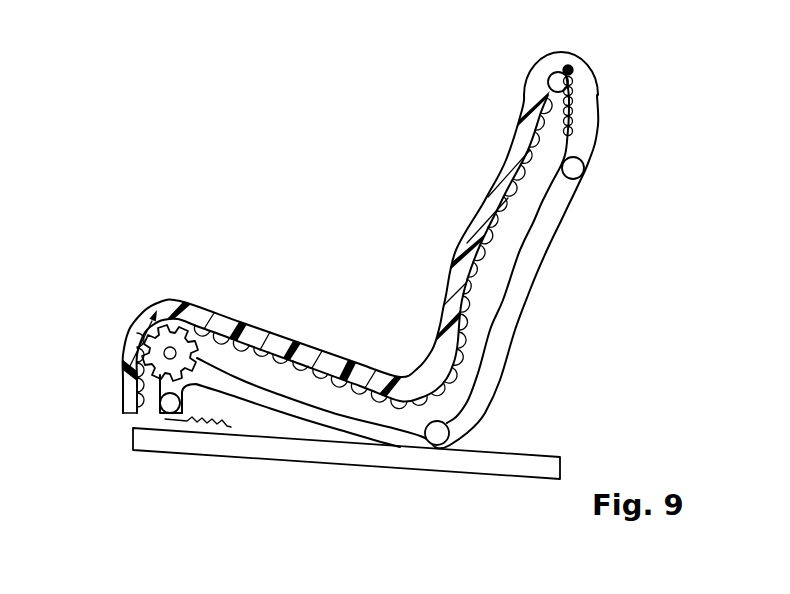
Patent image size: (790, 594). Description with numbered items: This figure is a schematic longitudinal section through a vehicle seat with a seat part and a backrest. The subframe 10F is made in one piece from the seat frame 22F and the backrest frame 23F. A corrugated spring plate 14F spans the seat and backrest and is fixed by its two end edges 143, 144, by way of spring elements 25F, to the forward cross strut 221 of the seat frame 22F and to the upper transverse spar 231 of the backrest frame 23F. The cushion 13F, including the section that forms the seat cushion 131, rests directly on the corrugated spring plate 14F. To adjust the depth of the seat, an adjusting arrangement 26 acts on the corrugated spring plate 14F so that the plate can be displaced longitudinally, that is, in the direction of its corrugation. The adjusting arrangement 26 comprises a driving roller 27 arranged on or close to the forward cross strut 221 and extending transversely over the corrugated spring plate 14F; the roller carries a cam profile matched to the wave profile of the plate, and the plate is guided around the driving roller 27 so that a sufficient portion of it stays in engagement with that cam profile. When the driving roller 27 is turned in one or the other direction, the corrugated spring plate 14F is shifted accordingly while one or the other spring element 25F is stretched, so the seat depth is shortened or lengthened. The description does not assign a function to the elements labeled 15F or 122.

The subframe 10F is at (470, 442).
The cushion 13F is at (354, 343).
The corrugated spring plate 14F is at (493, 193).
The rack 15F is at (188, 428).
The seat frame 22F is at (302, 414).
The backrest frame 23F is at (517, 283).
The spring elements 25F is at (572, 113).
The adjusting arrangement 26 is at (158, 304).
The driving roller 27 is at (105, 368).
The rib 122 is at (468, 241).
The seat cushion 131 is at (276, 345).
The end edge 143 is at (143, 414).
The end edge 144 is at (549, 88).
The forward cross strut 221 is at (168, 404).
The upper transverse spar 231 is at (573, 66).